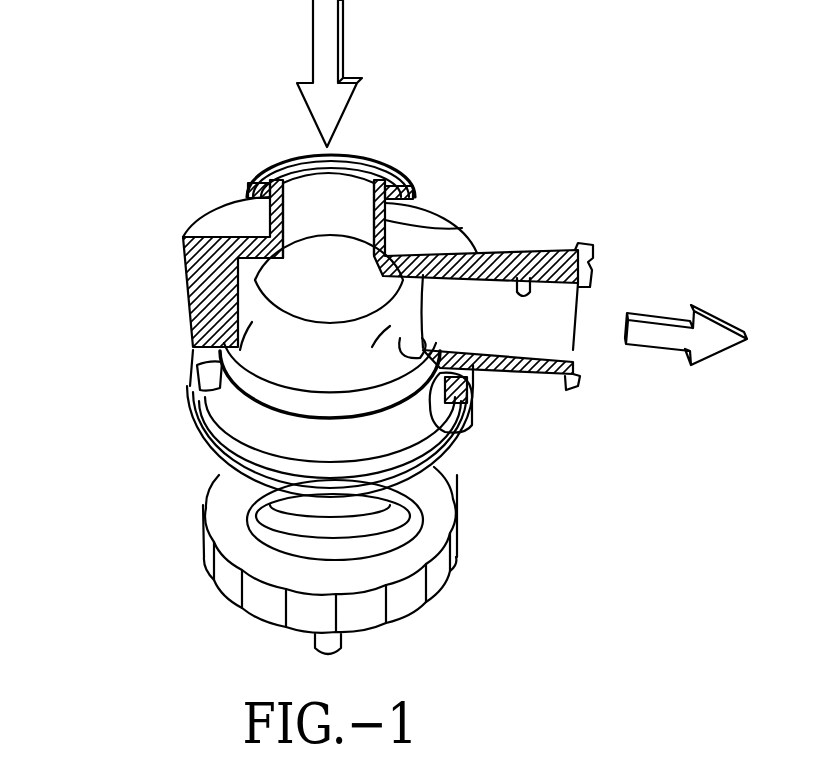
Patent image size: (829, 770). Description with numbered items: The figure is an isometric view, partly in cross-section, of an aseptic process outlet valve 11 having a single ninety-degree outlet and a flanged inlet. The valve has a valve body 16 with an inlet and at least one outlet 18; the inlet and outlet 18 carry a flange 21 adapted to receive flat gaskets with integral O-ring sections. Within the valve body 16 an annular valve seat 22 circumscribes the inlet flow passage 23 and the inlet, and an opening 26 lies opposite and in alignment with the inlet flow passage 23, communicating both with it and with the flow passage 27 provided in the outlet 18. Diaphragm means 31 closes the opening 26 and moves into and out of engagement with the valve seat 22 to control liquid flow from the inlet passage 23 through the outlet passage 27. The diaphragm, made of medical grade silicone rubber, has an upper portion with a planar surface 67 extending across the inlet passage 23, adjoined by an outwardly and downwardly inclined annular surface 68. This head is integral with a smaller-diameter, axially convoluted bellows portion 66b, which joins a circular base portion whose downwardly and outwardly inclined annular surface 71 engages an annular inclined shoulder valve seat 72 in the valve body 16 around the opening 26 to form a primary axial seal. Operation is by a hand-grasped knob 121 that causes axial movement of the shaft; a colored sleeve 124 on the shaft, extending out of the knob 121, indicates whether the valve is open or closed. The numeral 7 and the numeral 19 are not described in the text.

The process outlet valve 11 is at (152, 150).
The valve body 16 is at (187, 255).
The annular valve seat 22 is at (253, 253).
The body shoulder 7 is at (480, 252).
The inlet flow passage 23 is at (350, 192).
The inlet cap flange 19 is at (410, 190).
The outlet 18 is at (540, 258).
The flow passage 27 is at (523, 280).
The flange 21 is at (593, 250).
The planar surface 67 is at (333, 253).
The outwardly and downwardly inclined annular surface 68 is at (267, 306).
The bellows portion 66b is at (270, 348).
The annular inclined shoulder valve seat 72 is at (418, 337).
The downwardly and outwardly inclined annular surface 71 is at (237, 395).
The diaphragm means 31 is at (218, 418).
The opening 26 is at (437, 430).
The knob 121 is at (447, 570).
The sleeve 124 is at (333, 652).